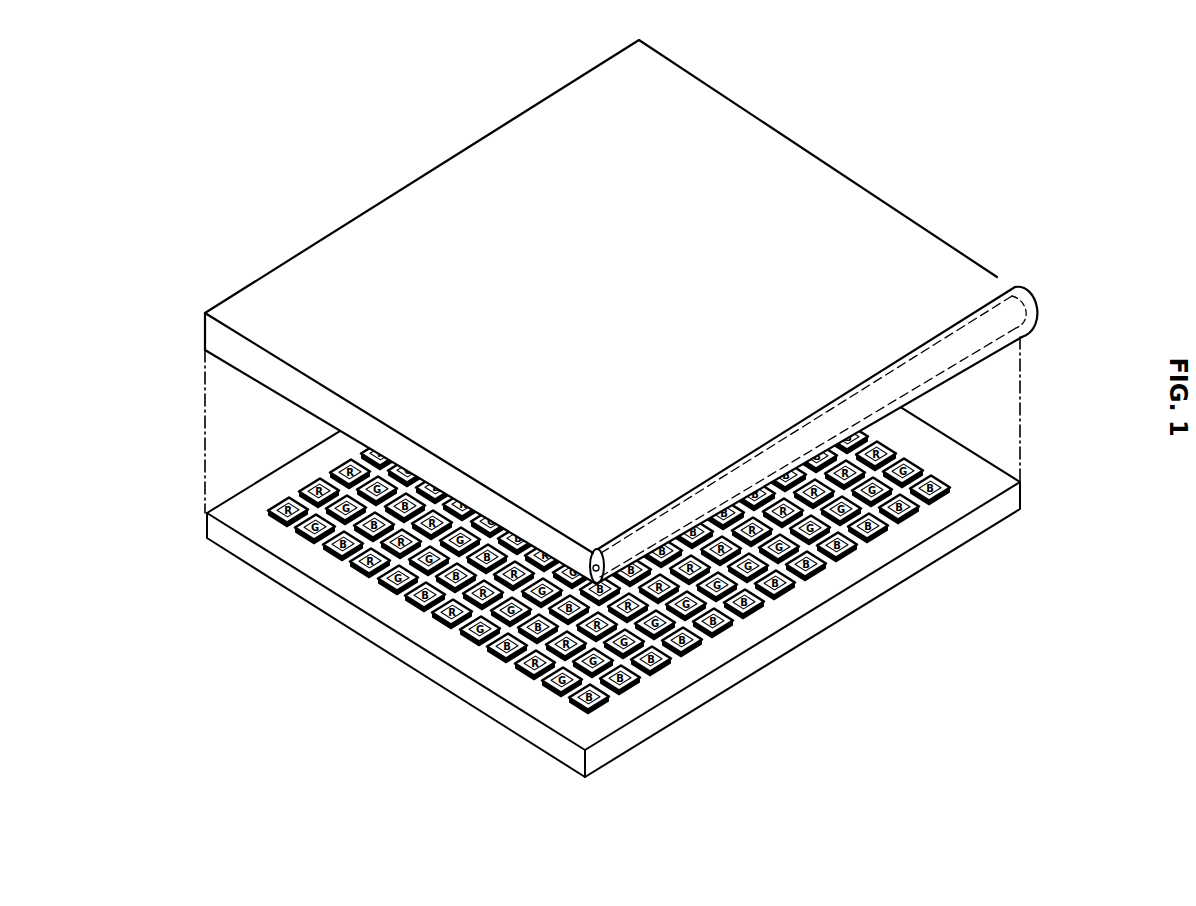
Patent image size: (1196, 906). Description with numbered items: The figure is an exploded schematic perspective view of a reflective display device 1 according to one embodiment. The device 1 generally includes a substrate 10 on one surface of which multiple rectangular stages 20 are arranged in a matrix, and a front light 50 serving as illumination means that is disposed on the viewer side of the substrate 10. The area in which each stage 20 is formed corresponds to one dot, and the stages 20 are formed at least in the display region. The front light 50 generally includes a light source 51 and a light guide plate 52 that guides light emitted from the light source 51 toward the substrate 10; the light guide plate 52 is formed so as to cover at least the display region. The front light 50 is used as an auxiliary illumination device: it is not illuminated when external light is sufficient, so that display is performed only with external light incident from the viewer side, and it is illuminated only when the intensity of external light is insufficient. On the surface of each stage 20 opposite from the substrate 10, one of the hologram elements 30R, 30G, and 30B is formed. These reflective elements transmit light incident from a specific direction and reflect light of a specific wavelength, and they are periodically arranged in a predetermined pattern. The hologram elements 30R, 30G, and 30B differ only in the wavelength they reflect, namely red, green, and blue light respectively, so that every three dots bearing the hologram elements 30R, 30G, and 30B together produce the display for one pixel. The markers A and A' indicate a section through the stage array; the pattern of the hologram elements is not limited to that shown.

The reflective display device 1 is at (654, 416).
The substrate 10 is at (887, 575).
The stage 20 is at (268, 516).
The hologram element 30R is at (515, 663).
The hologram element 30G is at (542, 680).
The hologram element 30B is at (569, 697).
The front light 50 is at (869, 423).
The light source 51 is at (852, 436).
The light guide plate 52 is at (1007, 268).
The section line end A is at (263, 447).
The section line end A' is at (686, 724).